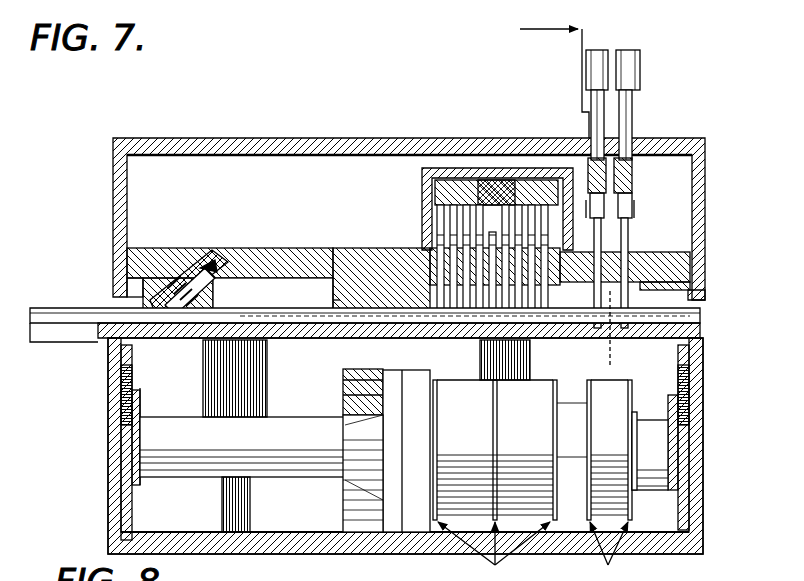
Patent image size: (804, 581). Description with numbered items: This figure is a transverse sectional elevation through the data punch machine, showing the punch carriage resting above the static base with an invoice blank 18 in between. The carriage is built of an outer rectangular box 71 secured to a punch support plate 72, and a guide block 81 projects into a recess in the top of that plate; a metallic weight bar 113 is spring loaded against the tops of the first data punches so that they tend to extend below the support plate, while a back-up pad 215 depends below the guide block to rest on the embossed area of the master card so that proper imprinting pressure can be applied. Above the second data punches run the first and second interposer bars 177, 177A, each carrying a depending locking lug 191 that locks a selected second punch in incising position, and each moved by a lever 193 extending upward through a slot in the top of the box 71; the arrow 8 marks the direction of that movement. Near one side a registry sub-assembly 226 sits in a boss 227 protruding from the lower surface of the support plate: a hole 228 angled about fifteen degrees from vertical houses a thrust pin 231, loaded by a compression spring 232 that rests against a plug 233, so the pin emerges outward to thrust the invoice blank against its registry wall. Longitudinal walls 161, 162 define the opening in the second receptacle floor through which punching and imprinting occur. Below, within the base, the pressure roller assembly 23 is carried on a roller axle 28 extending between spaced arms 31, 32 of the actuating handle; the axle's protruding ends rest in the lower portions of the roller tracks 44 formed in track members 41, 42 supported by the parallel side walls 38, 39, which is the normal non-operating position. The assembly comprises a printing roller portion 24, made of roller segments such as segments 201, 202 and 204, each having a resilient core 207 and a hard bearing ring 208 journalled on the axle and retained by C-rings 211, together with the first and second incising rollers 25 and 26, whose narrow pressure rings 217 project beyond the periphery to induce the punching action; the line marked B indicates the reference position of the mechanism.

The outer rectangular box 71 is at (236, 140).
The punch support plate 72 is at (137, 255).
The registry sub-assembly 226 is at (170, 300).
The compression spring 232 is at (206, 262).
The plug 233 is at (212, 268).
The hole 228 is at (218, 268).
The boss 227 is at (213, 290).
The invoice blank 18 is at (108, 312).
The back-up pad 215 is at (352, 262).
The guide block 81 is at (403, 268).
The weight bar 113 is at (466, 172).
The first interposer bar 177 is at (588, 175).
The second interposer bar 177A is at (632, 175).
The levers 193 is at (624, 48).
The locking lug 191 is at (628, 213).
The direction arrow 8 is at (546, 79).
The thrust pin 231 is at (172, 341).
The roller track 44 is at (122, 379).
The arm 31 is at (142, 399).
The track member 41 is at (130, 431).
The side wall 38 is at (112, 471).
The roller axle 28 is at (183, 463).
The longitudinal wall 161 is at (346, 341).
The roller segment 202 is at (376, 370).
The pressure roller assembly 23 is at (413, 366).
The resilient core 207 is at (343, 385).
The bearing ring 208 is at (343, 403).
The roller segment 201 is at (343, 395).
The C-rings 211 is at (340, 486).
The printing roller portion 24 is at (360, 499).
The first punch roller segment 25 is at (473, 405).
The roller segment 204 is at (520, 457).
The pressure rings 217 is at (533, 551).
The reference line B is at (610, 300).
The longitudinal wall 162 is at (636, 341).
The second punch roller segment 26 is at (612, 407).
The side wall 39 is at (692, 411).
The arm 32 is at (680, 453).
The track member 42 is at (690, 498).